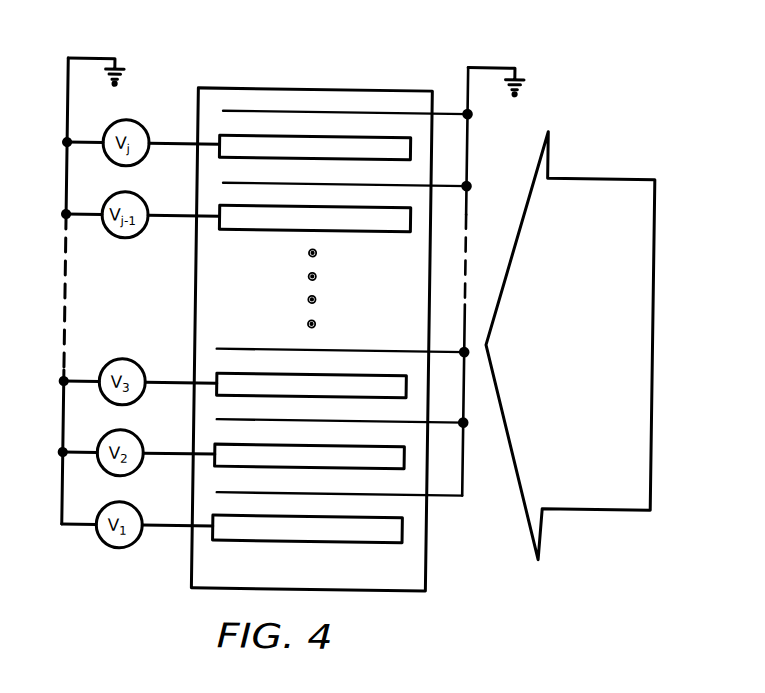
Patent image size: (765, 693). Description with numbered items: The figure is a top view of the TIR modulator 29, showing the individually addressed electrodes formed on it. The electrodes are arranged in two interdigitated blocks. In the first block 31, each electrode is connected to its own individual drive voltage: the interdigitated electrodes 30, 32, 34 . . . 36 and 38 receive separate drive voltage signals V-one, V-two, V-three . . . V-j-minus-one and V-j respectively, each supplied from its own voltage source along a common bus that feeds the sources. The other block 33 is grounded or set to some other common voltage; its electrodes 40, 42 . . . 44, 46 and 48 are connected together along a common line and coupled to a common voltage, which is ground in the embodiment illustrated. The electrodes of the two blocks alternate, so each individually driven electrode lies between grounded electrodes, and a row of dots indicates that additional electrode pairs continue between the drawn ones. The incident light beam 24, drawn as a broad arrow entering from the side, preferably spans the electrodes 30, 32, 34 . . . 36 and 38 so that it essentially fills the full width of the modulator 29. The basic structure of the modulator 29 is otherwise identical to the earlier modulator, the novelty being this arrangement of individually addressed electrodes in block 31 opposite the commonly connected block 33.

The incident light beam 24 is at (606, 193).
The TIR modulator 29 is at (309, 82).
The interdigitated electrode 30 is at (274, 537).
The block of electrodes 31 is at (64, 418).
The interdigitated electrode 32 is at (217, 466).
The block of electrodes 33 is at (466, 152).
The interdigitated electrode 34 is at (250, 375).
The interdigitated electrode 36 is at (257, 231).
The interdigitated electrode 38 is at (217, 140).
The electrode 40 is at (443, 494).
The electrode 42 is at (444, 421).
The electrode 44 is at (384, 350).
The electrode 46 is at (386, 185).
The electrode 48 is at (405, 112).